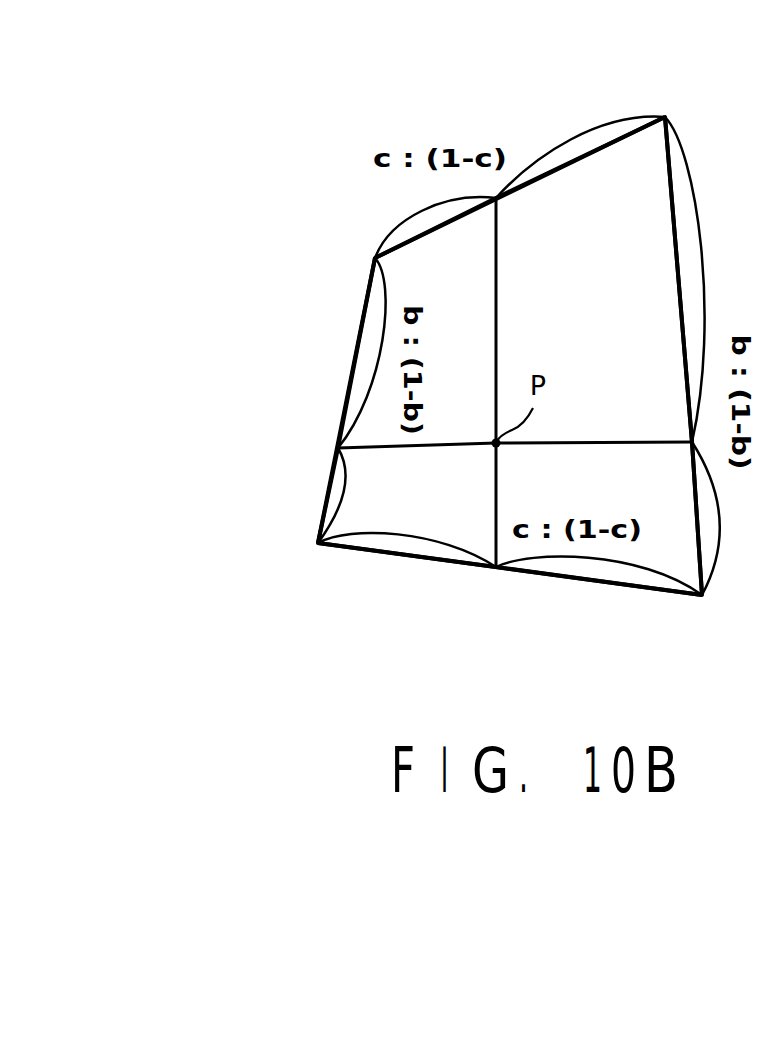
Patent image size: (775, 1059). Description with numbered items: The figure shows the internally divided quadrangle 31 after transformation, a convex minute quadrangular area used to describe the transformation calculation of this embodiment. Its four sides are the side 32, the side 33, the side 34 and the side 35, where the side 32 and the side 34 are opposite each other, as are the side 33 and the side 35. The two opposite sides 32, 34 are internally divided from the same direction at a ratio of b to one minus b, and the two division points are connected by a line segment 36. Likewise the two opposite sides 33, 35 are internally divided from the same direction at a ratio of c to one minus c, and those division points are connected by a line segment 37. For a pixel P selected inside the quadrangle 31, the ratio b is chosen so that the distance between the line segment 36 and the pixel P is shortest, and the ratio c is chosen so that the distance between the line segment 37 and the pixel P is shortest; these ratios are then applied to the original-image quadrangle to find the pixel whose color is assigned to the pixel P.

The internally divided quadrangle after transformation 31 is at (525, 213).
The side 32 is at (340, 418).
The side 33 is at (535, 577).
The side 34 is at (682, 277).
The side 35 is at (614, 136).
The line segment 36 is at (592, 438).
The line segment 37 is at (497, 342).